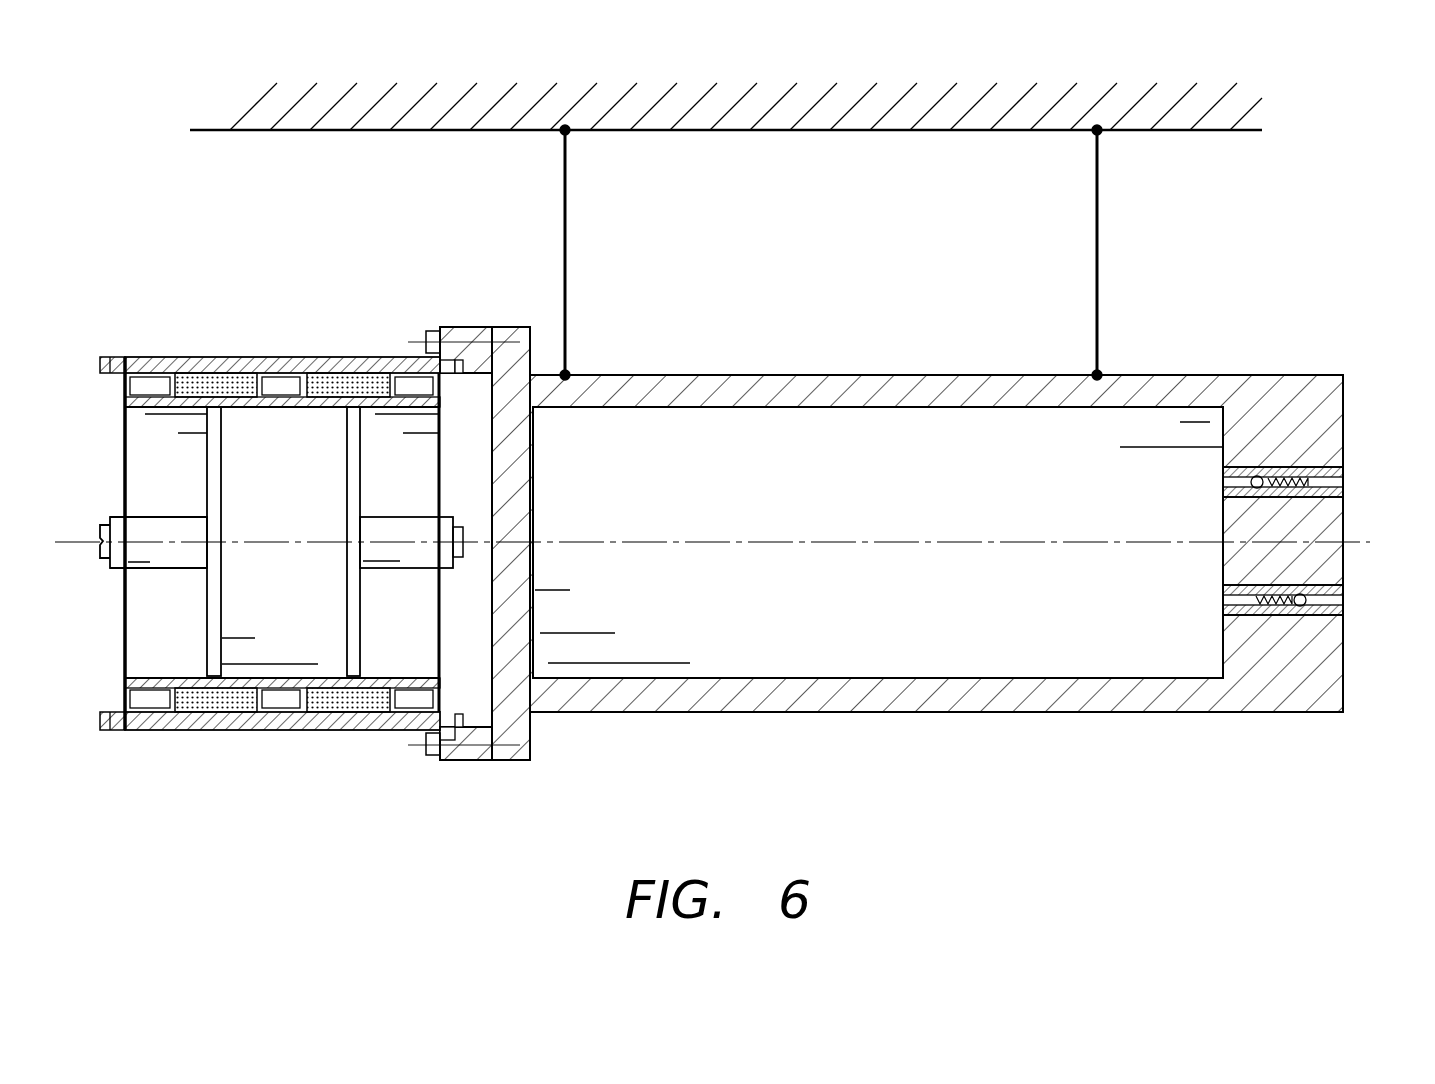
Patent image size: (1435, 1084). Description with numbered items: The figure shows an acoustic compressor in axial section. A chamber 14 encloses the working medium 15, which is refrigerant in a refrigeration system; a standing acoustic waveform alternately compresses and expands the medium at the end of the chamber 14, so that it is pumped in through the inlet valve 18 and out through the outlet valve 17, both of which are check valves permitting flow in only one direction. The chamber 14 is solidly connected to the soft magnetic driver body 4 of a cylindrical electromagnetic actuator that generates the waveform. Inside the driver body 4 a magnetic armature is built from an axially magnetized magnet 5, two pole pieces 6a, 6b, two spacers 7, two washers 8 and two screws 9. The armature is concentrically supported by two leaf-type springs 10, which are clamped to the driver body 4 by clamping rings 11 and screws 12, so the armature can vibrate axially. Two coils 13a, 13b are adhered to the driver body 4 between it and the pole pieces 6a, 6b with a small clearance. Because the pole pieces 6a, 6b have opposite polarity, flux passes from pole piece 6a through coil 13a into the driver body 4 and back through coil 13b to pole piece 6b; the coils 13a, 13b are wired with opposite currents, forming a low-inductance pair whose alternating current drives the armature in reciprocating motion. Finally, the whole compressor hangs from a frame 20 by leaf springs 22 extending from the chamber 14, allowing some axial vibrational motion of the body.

The driver body 4 is at (272, 720).
The magnet 5 is at (294, 526).
The pole piece 6a is at (213, 645).
The pole piece 6b is at (355, 620).
The spacer 7 is at (160, 555).
The washer 8 is at (110, 565).
The screw 9 is at (100, 526).
The leaf-type spring 10 is at (122, 448).
The clamping ring 11 is at (118, 357).
The screw 12 is at (105, 357).
The coil 13a is at (232, 357).
The coil 13b is at (352, 357).
The chamber 14 is at (977, 590).
The working medium 15 is at (877, 524).
The outlet valve 17 is at (1352, 469).
The inlet valve 18 is at (1352, 611).
The frame 20 is at (922, 122).
The leaf spring 22 is at (567, 263).